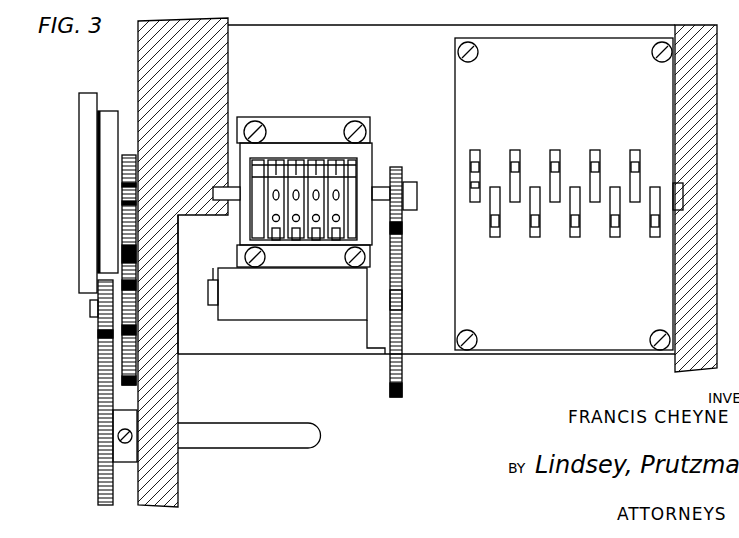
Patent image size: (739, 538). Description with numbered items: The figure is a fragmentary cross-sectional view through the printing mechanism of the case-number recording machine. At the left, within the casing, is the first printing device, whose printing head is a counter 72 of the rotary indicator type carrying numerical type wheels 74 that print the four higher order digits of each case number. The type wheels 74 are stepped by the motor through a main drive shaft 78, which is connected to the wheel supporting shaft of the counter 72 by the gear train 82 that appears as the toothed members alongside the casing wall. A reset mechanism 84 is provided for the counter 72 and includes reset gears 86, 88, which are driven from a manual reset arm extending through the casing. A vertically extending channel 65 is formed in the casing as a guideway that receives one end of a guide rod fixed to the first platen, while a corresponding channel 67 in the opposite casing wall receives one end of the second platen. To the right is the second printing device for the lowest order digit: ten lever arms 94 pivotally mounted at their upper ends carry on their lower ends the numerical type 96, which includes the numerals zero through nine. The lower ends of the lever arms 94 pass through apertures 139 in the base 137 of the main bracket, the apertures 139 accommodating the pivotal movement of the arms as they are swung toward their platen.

The channel 65 is at (228, 190).
The channel 67 is at (676, 188).
The counter 72 is at (304, 193).
The numerical type wheels 74 is at (308, 232).
The main drive shaft 78 is at (309, 430).
The gear train 82 is at (128, 284).
The reset mechanism 84 is at (404, 226).
The reset gear 86 is at (397, 168).
The reset gear 88 is at (401, 303).
The lever arms 94 is at (492, 210).
The numerical type 96 is at (598, 160).
The base 137 is at (543, 350).
The apertures 139 is at (535, 237).